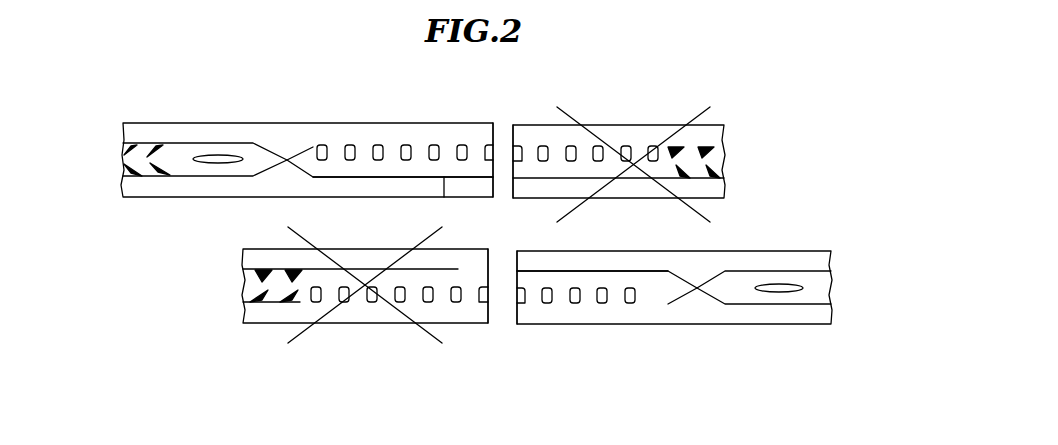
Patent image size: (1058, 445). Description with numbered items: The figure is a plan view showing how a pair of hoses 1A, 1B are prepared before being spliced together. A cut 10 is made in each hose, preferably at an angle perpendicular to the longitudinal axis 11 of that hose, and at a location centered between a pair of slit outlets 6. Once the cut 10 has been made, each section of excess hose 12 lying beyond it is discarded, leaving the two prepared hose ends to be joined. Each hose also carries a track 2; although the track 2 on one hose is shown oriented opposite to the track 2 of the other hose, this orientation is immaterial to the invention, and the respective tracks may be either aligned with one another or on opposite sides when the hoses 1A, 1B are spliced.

The hose 1A is at (308, 92).
The hose 1B is at (641, 352).
The track 2 is at (444, 197).
The slit outlet 6 is at (219, 142).
The cut 10 is at (497, 110).
The longitudinal axis 11 is at (123, 158).
The excess hose 12 is at (616, 125).